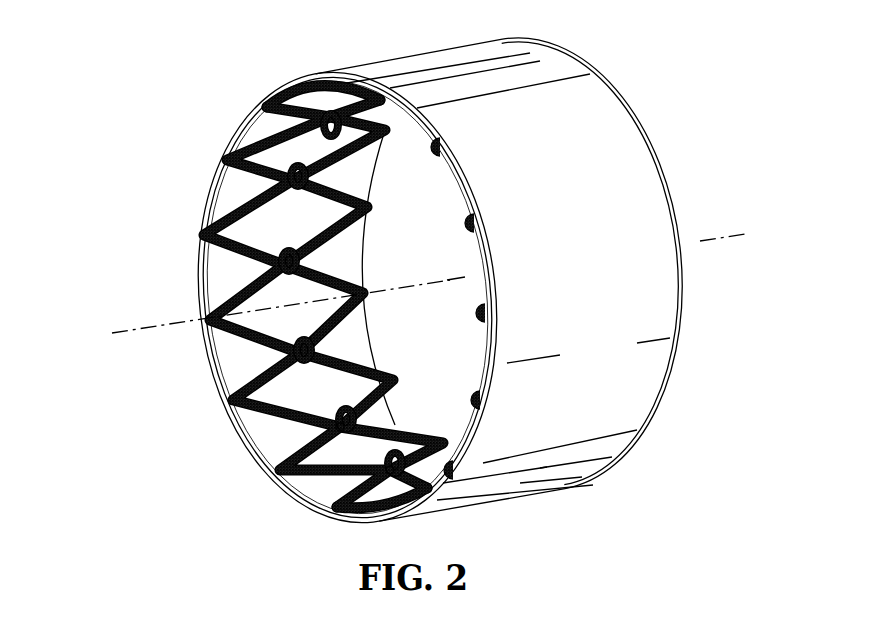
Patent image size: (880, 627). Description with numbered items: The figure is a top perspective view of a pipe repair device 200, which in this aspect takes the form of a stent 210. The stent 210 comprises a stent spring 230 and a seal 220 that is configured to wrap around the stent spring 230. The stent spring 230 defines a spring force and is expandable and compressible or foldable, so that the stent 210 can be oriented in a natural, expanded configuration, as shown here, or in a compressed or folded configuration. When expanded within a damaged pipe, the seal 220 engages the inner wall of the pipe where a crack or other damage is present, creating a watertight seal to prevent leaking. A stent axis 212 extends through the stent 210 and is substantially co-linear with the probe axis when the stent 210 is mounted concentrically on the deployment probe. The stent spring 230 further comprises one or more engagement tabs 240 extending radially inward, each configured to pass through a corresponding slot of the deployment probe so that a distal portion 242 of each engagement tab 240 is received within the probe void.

The pipe repair device 200 is at (152, 141).
The stent 210 is at (90, 184).
The stent axis 212 is at (126, 334).
The seal 220 is at (530, 112).
The stent spring 230 is at (240, 249).
The engagement tab 240 is at (295, 182).
The distal portion 242 is at (332, 405).